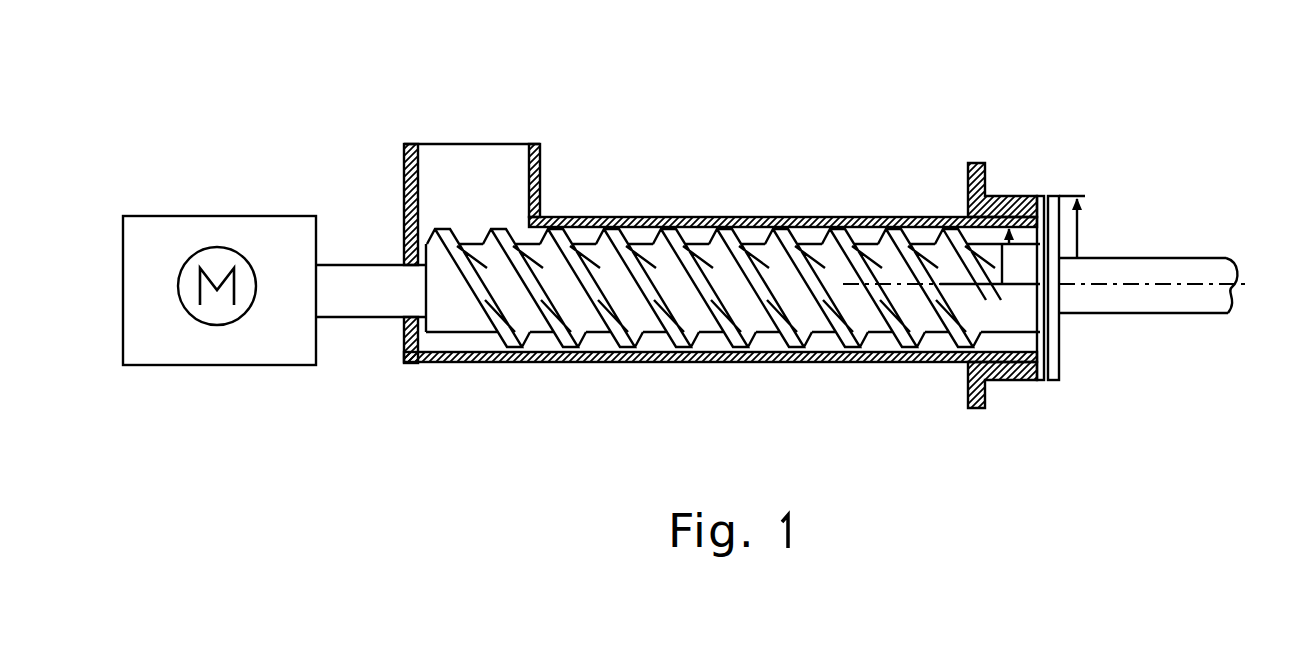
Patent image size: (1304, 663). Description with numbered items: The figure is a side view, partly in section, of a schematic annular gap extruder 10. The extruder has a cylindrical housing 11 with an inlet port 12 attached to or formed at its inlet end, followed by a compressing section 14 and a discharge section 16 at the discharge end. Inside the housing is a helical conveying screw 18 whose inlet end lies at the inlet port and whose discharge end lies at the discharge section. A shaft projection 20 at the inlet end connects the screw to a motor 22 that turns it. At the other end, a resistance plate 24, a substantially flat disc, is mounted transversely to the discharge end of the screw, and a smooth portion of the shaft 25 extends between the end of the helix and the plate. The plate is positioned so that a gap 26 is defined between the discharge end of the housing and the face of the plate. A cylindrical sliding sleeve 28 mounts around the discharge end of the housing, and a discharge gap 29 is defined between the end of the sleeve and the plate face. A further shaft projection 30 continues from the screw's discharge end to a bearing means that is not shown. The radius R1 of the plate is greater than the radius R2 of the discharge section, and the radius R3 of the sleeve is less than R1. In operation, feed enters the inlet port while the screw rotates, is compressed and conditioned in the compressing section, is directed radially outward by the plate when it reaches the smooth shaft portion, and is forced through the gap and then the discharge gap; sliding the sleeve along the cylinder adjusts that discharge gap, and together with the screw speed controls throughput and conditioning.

The annular gap extruder 10 is at (660, 99).
The cylindrical housing 11 is at (640, 217).
The inlet port 12 is at (522, 156).
The compressing section 14 is at (601, 370).
The discharge section 16 is at (946, 366).
The helical conveying screw 18 is at (470, 318).
The shaft projection 20 is at (373, 263).
The motor 22 is at (238, 215).
The resistance plate 24 is at (1053, 196).
The smooth portion of the shaft 25 is at (1025, 312).
The gap 26 is at (1028, 350).
The cylindrical sliding sleeve 28 is at (992, 382).
The discharge gap 29 is at (1042, 196).
The shaft projection 30 is at (1187, 257).
The radius of the plate R1 is at (1080, 228).
The radius of the discharge section R2 is at (1006, 252).
The radius of the sliding sleeve R3 is at (1028, 265).